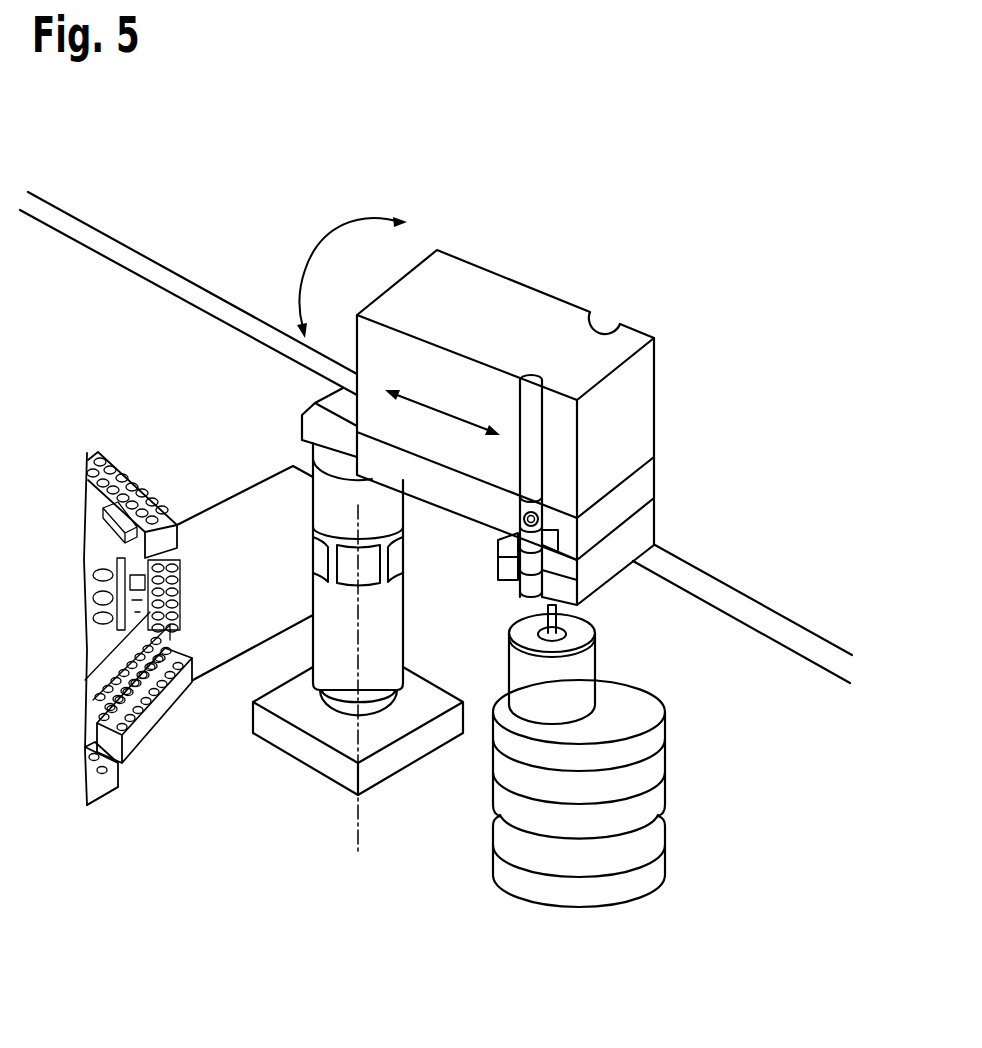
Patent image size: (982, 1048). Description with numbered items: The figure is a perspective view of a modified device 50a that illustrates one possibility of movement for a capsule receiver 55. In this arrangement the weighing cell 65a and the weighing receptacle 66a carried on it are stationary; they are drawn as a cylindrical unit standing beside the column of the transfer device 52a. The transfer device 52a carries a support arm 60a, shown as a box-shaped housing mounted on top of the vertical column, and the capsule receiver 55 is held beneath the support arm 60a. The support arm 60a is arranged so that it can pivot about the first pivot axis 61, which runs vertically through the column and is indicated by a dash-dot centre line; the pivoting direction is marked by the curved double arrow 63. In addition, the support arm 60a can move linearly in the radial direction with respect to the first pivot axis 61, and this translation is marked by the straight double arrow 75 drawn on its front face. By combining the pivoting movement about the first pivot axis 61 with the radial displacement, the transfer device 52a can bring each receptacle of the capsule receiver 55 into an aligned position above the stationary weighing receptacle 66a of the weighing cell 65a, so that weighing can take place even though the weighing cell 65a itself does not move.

The device 50a is at (552, 382).
The transfer device 52a is at (250, 764).
The capsule receiver 55 is at (655, 505).
The support arm 60a is at (537, 310).
The first pivot axis 61 is at (358, 838).
The double arrow 63 is at (340, 226).
The weighing cell 65a is at (591, 753).
The weighing receptacle 66a is at (580, 628).
The double arrow 75 is at (453, 414).